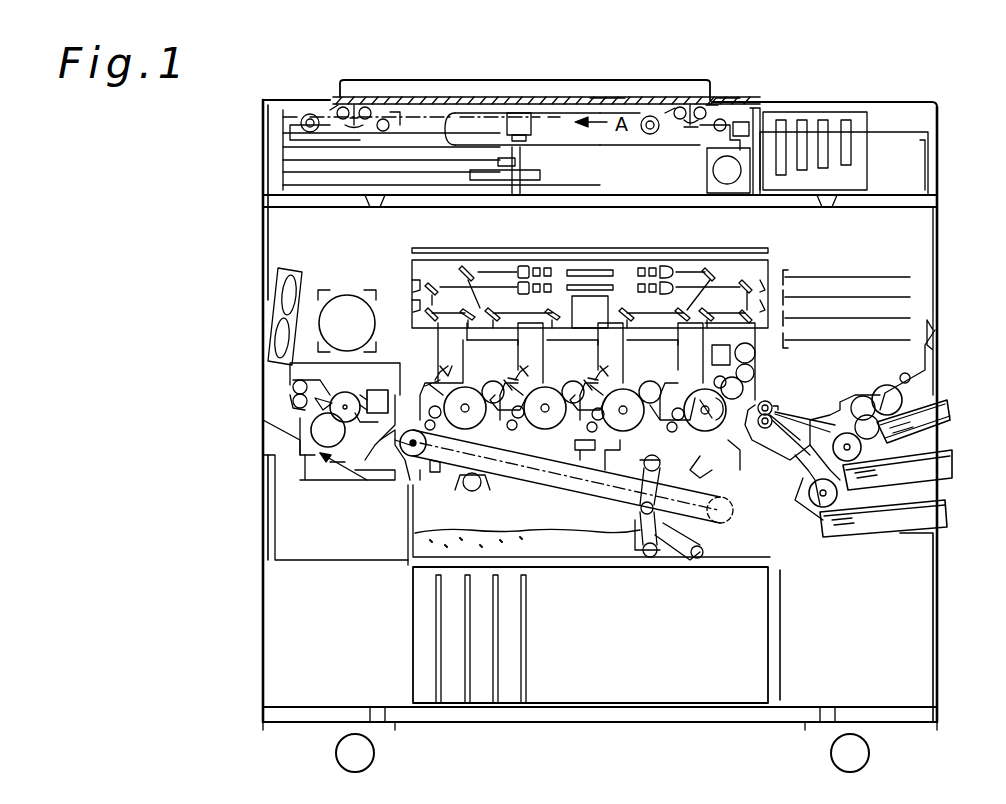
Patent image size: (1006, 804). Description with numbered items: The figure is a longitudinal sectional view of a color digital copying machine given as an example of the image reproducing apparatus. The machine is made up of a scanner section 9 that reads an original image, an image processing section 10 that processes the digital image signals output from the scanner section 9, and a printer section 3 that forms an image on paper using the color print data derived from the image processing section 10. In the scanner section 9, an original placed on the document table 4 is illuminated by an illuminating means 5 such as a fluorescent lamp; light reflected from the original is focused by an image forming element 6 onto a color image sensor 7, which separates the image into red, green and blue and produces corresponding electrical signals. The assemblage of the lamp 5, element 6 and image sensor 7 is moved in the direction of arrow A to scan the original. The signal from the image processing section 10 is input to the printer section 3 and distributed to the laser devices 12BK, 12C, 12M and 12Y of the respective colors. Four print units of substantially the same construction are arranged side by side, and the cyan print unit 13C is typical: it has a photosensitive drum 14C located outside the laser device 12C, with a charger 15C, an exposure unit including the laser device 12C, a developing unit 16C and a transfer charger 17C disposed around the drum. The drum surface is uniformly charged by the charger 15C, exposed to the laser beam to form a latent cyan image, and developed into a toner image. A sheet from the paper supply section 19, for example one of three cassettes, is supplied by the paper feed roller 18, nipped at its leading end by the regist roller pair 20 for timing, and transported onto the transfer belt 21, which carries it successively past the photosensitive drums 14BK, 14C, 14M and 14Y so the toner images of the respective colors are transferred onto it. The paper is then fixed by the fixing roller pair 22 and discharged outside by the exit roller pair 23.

The printer section 3 is at (943, 262).
The document table 4 is at (593, 100).
The illuminating means 5 is at (712, 104).
The image forming element 6 is at (690, 108).
The color image sensor 7 is at (697, 130).
The scanner section 9 is at (775, 98).
The image processing section 10 is at (610, 660).
The laser device 12Y is at (565, 285).
The laser device 12M is at (585, 270).
The laser device 12C is at (614, 272).
The laser device 12BK is at (612, 290).
The print unit 13C is at (598, 443).
The photosensitive drum 14Y is at (455, 430).
The photosensitive drum 14M is at (530, 430).
The photosensitive drum 14C is at (645, 432).
The photosensitive drum 14BK is at (695, 432).
The charger 15C is at (605, 385).
The developing unit 16C is at (650, 388).
The transfer charger 17C is at (625, 445).
The paper feed roller 18 is at (885, 398).
The paper supply section 19 is at (947, 437).
The regist roller pair 20 is at (768, 403).
The transfer belt 21 is at (710, 460).
The fixing roller pair 22 is at (335, 425).
The exit roller pair 23 is at (293, 388).